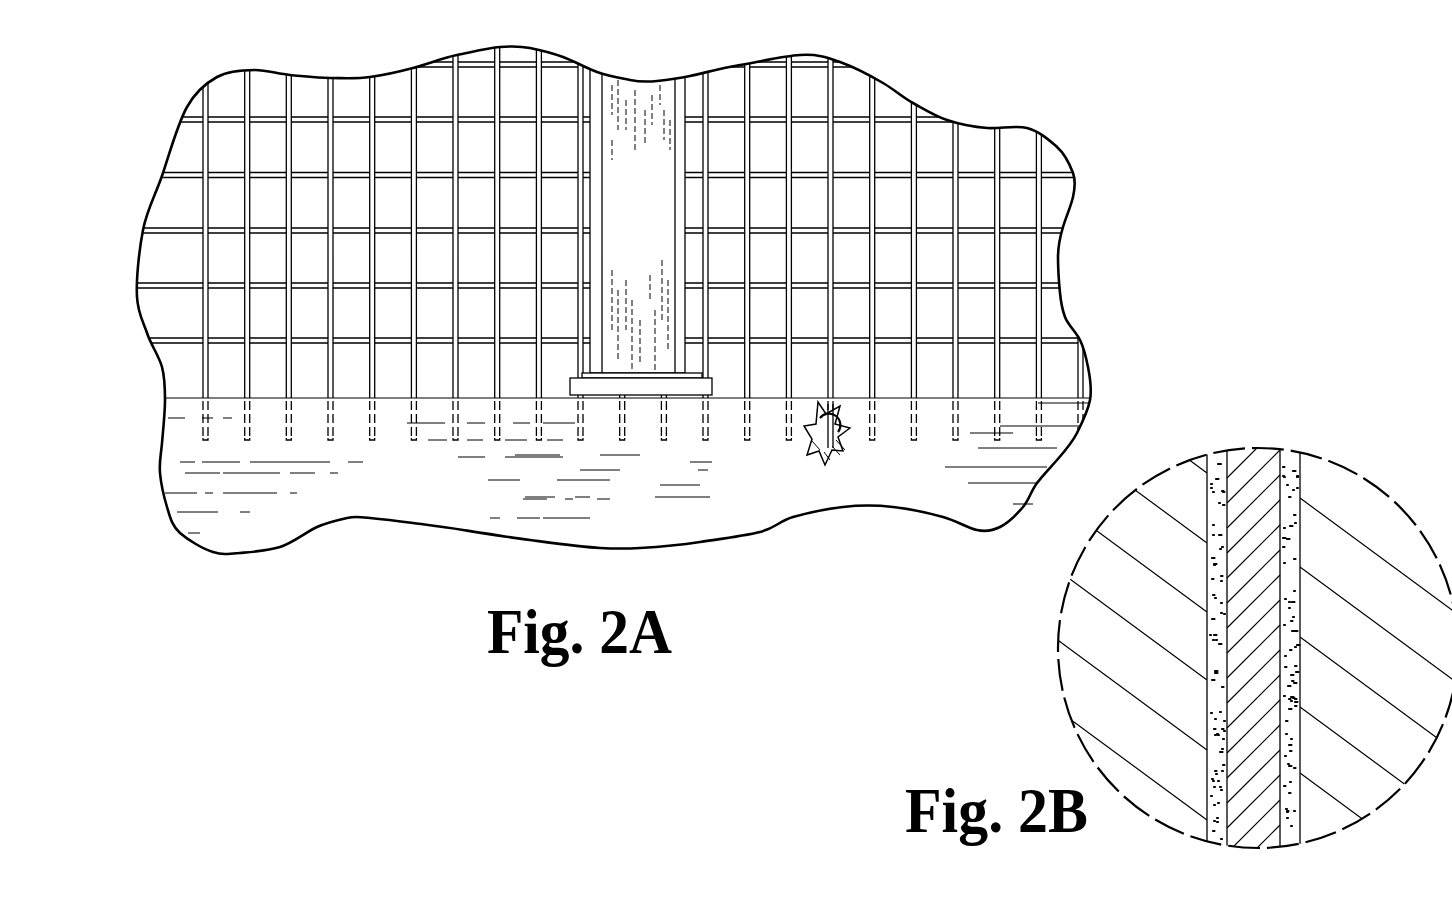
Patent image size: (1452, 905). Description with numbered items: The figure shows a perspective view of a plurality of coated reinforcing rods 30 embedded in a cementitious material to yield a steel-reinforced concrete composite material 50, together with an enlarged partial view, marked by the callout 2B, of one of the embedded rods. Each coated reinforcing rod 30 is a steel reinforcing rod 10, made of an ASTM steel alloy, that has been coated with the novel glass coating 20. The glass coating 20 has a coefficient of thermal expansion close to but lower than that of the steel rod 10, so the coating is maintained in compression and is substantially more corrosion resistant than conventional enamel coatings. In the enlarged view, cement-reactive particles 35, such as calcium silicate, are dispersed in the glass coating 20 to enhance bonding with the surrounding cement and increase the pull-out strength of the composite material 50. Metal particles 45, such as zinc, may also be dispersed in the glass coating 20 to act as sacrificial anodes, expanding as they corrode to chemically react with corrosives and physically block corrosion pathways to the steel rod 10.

In FIG. 2B, the steel reinforcing rod 10 is at (1282, 805).
In FIG. 2B, the glass coating 20 is at (1292, 446).
In FIG. 2A, the coated reinforcing rod 30 is at (1075, 304).
In FIG. 2B, the coated reinforcing rod 30 is at (1180, 648).
In FIG. 2B, the cement-reactive particles 35 is at (1296, 650).
In FIG. 2B, the metal particles 45 is at (1288, 730).
In FIG. 2A, the steel-reinforced concrete composite material 50 is at (412, 503).
In FIG. 2A, the detail view callout 2B is at (848, 432).